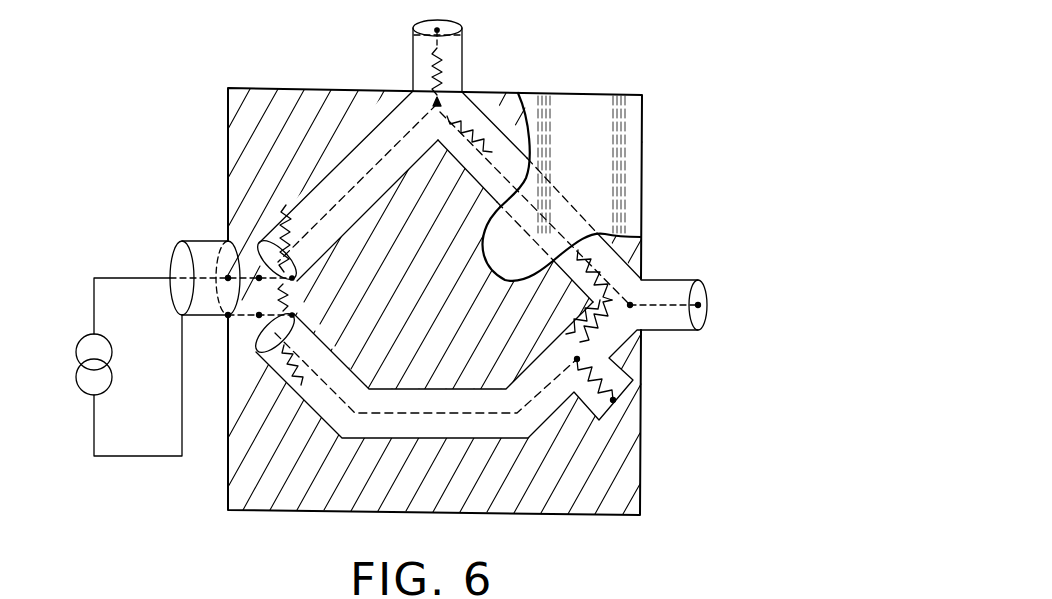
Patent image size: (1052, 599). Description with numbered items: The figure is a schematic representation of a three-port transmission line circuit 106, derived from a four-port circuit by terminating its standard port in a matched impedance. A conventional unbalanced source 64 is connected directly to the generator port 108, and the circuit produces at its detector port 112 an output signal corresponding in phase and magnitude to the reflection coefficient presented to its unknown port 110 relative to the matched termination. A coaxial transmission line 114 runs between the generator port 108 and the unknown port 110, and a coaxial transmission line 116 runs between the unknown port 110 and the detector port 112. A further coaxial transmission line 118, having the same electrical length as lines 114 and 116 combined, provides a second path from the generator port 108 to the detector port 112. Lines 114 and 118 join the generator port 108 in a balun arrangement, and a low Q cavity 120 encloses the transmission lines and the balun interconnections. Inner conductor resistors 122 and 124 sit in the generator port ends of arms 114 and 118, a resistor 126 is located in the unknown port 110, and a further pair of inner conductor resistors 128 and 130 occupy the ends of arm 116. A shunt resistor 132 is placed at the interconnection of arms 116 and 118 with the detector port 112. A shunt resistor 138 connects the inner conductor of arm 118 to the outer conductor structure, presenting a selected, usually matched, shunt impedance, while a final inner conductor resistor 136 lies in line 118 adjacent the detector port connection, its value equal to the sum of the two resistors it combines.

The unbalanced source 64 is at (76, 352).
The three-port circuit 106 is at (207, 135).
The generator port 108 is at (170, 257).
The unknown port 110 is at (413, 37).
The detector port 112 is at (665, 331).
The coaxial transmission line 114 is at (330, 249).
The coaxial transmission line 116 is at (470, 186).
The coaxial transmission line 118 is at (400, 442).
The low Q cavity 120 is at (644, 172).
The inner conductor resistor 122 is at (289, 228).
The inner conductor resistor 124 is at (284, 362).
The resistor 126 is at (428, 77).
The inner conductor resistor 128 is at (490, 118).
The inner conductor resistor 130 is at (570, 283).
The shunt resistor 132 is at (652, 278).
The inner conductor resistor 136 is at (566, 333).
The shunt resistor 138 is at (585, 412).